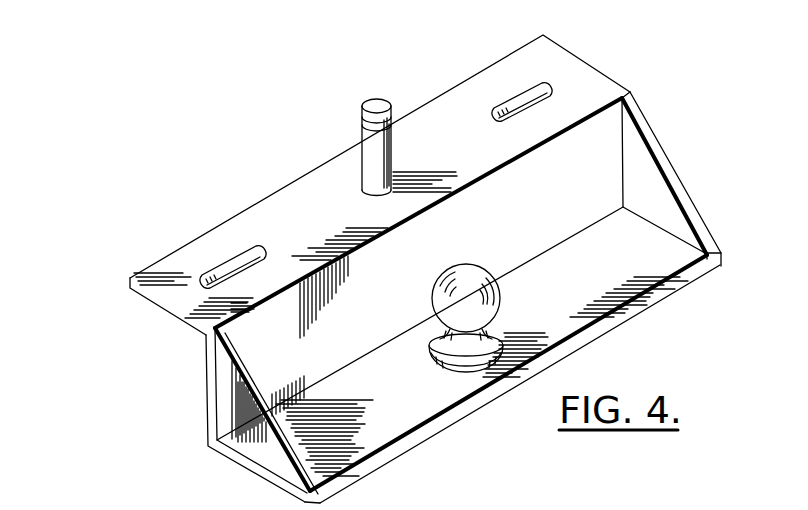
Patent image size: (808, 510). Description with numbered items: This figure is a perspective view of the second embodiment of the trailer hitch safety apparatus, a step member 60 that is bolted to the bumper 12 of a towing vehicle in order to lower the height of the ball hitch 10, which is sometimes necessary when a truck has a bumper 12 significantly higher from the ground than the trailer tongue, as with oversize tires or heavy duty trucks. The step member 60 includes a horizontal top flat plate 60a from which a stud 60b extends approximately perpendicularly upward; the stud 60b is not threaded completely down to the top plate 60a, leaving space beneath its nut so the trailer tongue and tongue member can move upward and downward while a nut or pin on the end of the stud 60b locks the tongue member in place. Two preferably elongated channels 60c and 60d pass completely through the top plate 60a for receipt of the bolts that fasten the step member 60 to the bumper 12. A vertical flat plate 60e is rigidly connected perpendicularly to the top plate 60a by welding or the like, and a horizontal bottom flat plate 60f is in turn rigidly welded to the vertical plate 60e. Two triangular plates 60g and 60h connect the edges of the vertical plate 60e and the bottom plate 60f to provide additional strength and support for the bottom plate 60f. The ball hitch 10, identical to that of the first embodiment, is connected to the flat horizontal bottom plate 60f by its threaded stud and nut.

The step member 60 is at (441, 268).
The horizontal top flat plate 60a is at (577, 77).
The stud 60b is at (380, 153).
The elongated channel 60c is at (237, 250).
The elongated channel 60d is at (530, 116).
The vertical flat plate 60e is at (567, 211).
The horizontal bottom flat plate 60f is at (672, 265).
The triangular plate 60g is at (653, 193).
The triangular plate 60h is at (227, 400).
The ball hitch 10 is at (470, 266).
The bumper 12 is at (407, 509).